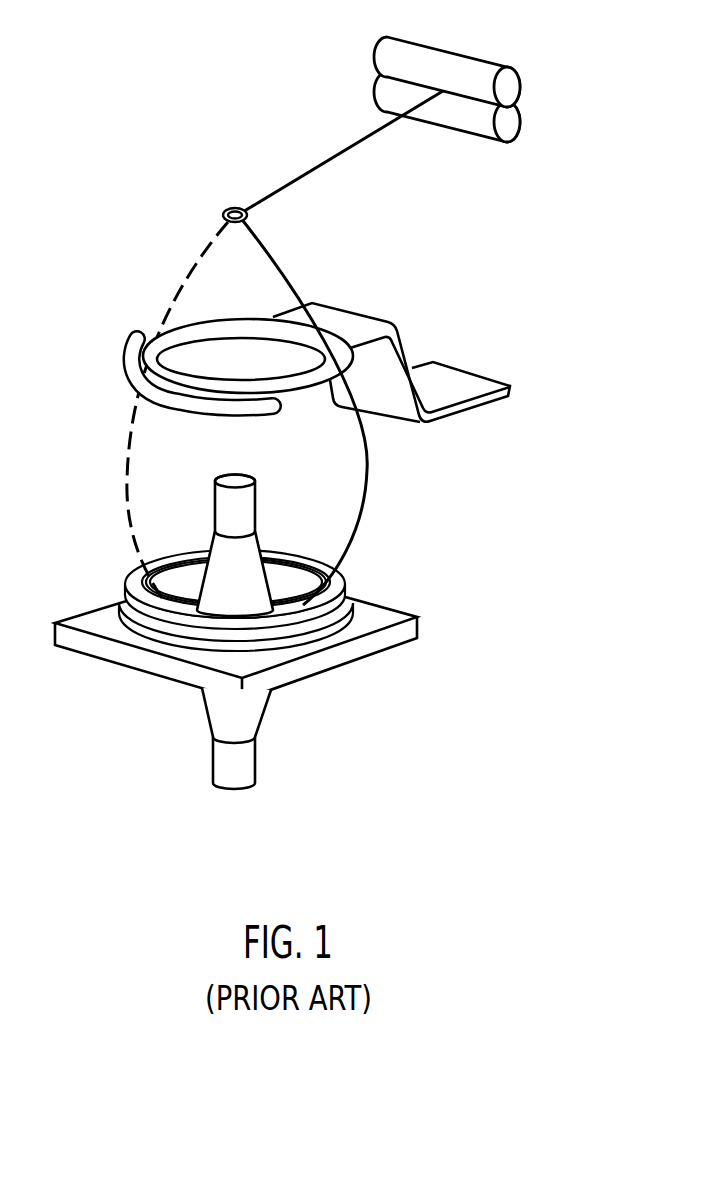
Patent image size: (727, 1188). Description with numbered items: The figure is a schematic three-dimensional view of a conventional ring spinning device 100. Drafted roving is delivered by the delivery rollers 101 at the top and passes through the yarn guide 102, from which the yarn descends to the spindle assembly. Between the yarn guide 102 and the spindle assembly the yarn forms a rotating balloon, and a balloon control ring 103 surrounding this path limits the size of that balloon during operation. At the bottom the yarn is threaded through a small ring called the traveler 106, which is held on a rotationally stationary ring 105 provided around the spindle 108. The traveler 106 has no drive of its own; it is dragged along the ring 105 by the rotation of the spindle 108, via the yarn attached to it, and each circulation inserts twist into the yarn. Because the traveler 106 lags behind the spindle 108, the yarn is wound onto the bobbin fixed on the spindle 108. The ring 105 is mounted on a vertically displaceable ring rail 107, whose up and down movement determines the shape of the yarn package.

The ring spinning device 100 is at (90, 52).
The delivery rollers 101 is at (527, 128).
The yarn guide 102 is at (222, 213).
The balloon control ring 103 is at (182, 333).
The ring 105 is at (185, 548).
The traveler 106 is at (305, 602).
The ring rail 107 is at (105, 648).
The spindle 108 is at (222, 770).